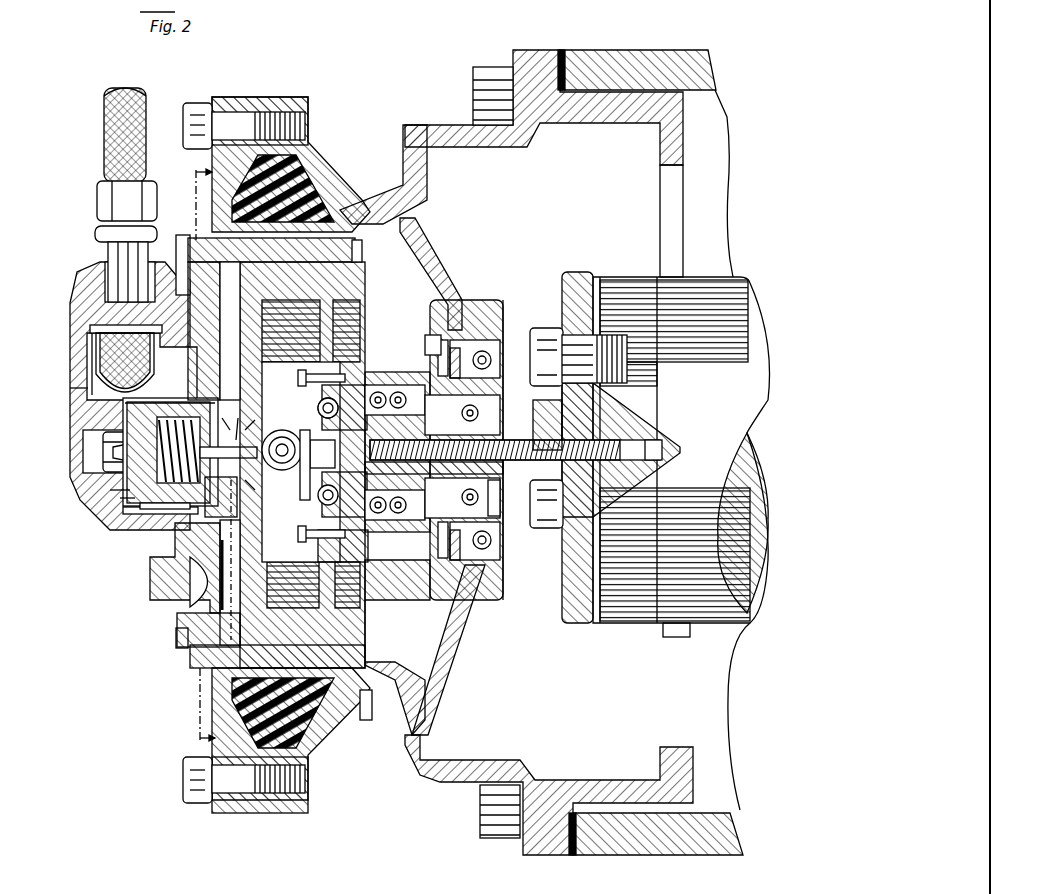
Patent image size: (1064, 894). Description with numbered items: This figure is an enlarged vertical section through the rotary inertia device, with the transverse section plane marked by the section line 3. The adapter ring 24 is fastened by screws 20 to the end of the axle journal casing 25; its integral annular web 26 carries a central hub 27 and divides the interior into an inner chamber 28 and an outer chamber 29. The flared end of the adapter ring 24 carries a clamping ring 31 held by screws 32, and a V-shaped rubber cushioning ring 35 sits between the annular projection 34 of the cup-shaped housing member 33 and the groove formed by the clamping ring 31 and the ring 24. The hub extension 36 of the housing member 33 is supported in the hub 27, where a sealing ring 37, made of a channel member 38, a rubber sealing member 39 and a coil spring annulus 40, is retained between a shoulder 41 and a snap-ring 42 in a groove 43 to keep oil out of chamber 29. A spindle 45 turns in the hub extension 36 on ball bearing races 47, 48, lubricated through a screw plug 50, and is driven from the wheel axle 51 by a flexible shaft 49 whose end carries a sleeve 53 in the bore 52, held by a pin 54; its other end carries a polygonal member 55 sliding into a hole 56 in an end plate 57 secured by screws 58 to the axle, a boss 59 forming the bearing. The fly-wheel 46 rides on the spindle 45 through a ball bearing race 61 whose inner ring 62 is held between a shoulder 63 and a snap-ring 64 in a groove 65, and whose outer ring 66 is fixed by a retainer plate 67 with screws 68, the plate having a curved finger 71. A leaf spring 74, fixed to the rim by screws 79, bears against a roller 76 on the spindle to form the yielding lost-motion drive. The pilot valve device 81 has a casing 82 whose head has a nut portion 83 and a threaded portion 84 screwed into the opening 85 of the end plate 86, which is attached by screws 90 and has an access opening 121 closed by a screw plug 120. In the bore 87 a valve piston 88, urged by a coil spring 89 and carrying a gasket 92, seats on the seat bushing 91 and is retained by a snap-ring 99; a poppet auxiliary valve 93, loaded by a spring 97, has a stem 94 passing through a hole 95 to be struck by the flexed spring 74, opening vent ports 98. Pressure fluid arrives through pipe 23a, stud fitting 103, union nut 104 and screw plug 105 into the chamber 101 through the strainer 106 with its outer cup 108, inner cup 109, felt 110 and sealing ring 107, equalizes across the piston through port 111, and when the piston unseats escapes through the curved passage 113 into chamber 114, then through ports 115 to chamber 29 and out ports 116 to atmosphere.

The section line 3- 3 is at (193, 455).
The screws 20 is at (473, 78).
The flexible pipe 23a is at (104, 118).
The adapter ring 24 is at (408, 180).
The axle journal casing 25 is at (612, 50).
The annular web 26 is at (440, 272).
The hub 27 is at (470, 310).
The chamber 28 is at (455, 145).
The chamber 29 is at (395, 678).
The clamping ring 31 is at (240, 97).
The screws 32 is at (197, 103).
The cup-shaped housing member 33 is at (385, 660).
The annular projection 34 is at (318, 190).
The cushioning ring 35 is at (312, 168).
The hub extension 36 is at (503, 382).
The sealing ring 37 is at (492, 560).
The annular channel member 38 is at (490, 545).
The annular sealing member 39 is at (470, 575).
The coil spring annulus 40 is at (490, 575).
The shoulder 41 is at (485, 340).
The snap-ring 42 is at (452, 348).
The annular groove 43 is at (445, 338).
The spindle 45 is at (497, 492).
The fly-wheel 46 is at (275, 622).
The ball bearing race 47 is at (397, 580).
The ball bearing race 48 is at (429, 573).
The flexible shaft 49 is at (522, 440).
The screw plug 50 is at (428, 355).
The wheel axle 51 is at (742, 283).
The longitudinal bore 52 is at (498, 468).
The sleeve 53 is at (462, 415).
The pin 54 is at (462, 498).
The rigid member 55 is at (600, 462).
The central hole 56 is at (645, 444).
The end plate 57 is at (565, 300).
The screws 58 is at (548, 330).
The cylindrical boss 59 is at (545, 425).
The ball bearing race 61 is at (318, 405).
The inner ring 62 is at (318, 485).
The annular shoulder 63 is at (385, 385).
The snap-ring 64 is at (322, 428).
The annular groove 65 is at (322, 455).
The outer bearing ring 66 is at (305, 380).
The annular retainer plate 67 is at (318, 545).
The screws 68 is at (300, 372).
The finger 71 is at (300, 500).
The leaf spring 74 is at (268, 330).
The roller 76 is at (300, 447).
The screws 79 is at (262, 262).
The pilot valve device 81 is at (150, 515).
The tubular casing 82 is at (165, 522).
The nut portion 83 is at (236, 522).
The threaded portion 84 is at (215, 380).
The threaded opening 85 is at (180, 400).
The end plate 86 is at (210, 356).
The cylindrical bore 87 is at (165, 405).
The valve piston 88 is at (103, 440).
The coil spring 89 is at (220, 415).
The screws 90 is at (182, 238).
The seat bushing 91 is at (112, 492).
The gasket 92 is at (110, 468).
The auxiliary valve 93 is at (239, 420).
The guide stem 94 is at (235, 458).
The hole 95 is at (225, 450).
The coil spring 97 is at (221, 497).
The vent ports 98 is at (256, 453).
The snap-ring 99 is at (125, 403).
The chamber 101 is at (85, 420).
The stud fitting 103 is at (95, 233).
The union nut 104 is at (97, 191).
The screw plug 105 is at (78, 283).
The cup-shaped strainer 106 is at (70, 388).
The annular sealing ring 107 is at (90, 325).
The outer cup 108 is at (108, 348).
The inner cup 109 is at (105, 370).
The filtering material 110 is at (100, 378).
The port 111 is at (125, 500).
The curved passage 113 is at (103, 453).
The chamber 114 is at (185, 645).
The ports 115 is at (356, 250).
The ports 116 is at (366, 715).
The screw plug 120 is at (165, 605).
The opening 121 is at (226, 560).